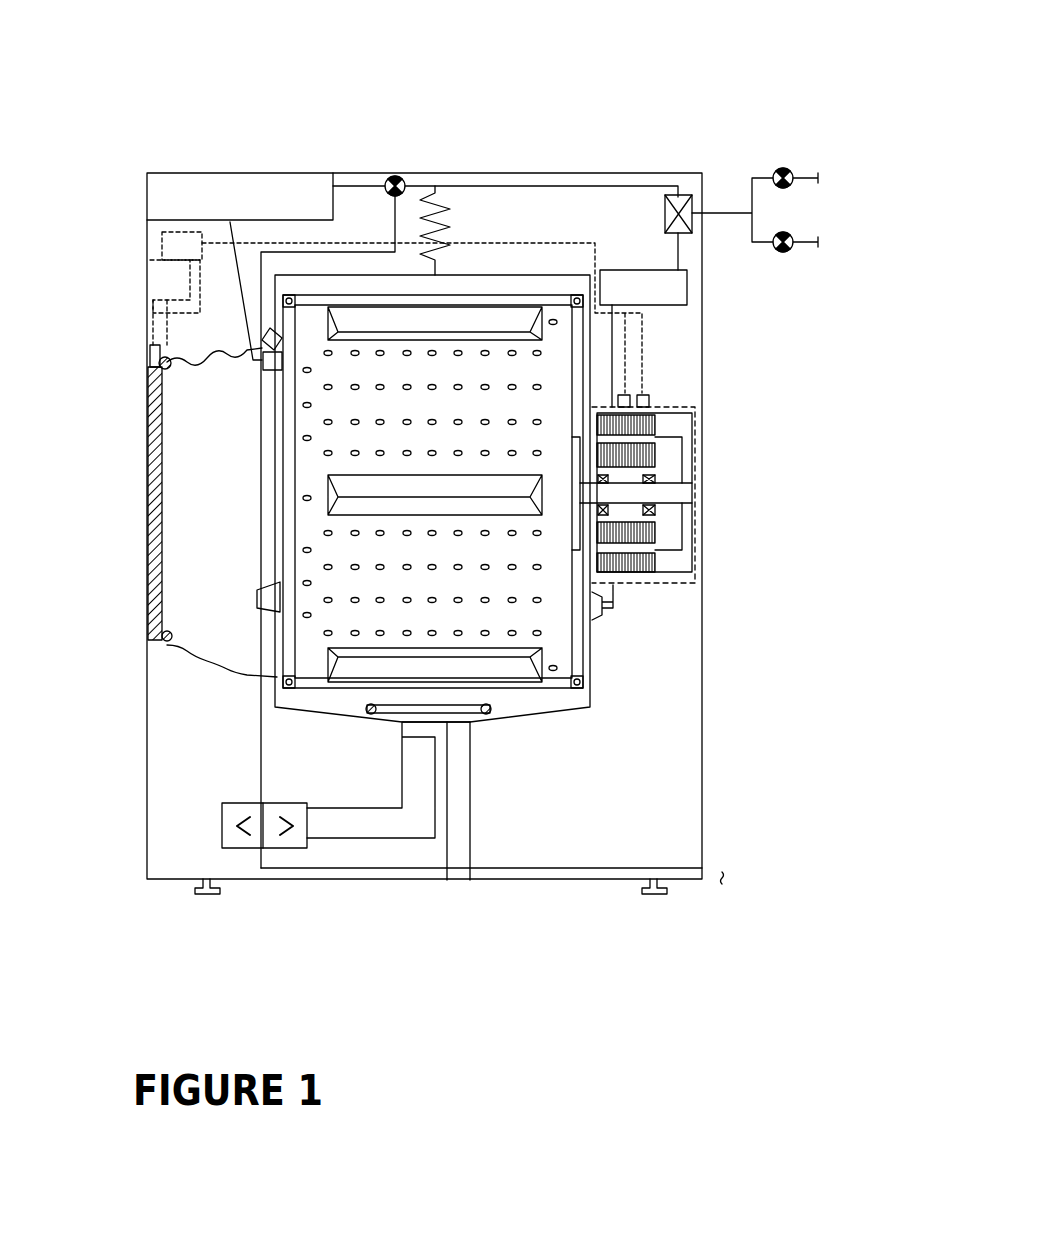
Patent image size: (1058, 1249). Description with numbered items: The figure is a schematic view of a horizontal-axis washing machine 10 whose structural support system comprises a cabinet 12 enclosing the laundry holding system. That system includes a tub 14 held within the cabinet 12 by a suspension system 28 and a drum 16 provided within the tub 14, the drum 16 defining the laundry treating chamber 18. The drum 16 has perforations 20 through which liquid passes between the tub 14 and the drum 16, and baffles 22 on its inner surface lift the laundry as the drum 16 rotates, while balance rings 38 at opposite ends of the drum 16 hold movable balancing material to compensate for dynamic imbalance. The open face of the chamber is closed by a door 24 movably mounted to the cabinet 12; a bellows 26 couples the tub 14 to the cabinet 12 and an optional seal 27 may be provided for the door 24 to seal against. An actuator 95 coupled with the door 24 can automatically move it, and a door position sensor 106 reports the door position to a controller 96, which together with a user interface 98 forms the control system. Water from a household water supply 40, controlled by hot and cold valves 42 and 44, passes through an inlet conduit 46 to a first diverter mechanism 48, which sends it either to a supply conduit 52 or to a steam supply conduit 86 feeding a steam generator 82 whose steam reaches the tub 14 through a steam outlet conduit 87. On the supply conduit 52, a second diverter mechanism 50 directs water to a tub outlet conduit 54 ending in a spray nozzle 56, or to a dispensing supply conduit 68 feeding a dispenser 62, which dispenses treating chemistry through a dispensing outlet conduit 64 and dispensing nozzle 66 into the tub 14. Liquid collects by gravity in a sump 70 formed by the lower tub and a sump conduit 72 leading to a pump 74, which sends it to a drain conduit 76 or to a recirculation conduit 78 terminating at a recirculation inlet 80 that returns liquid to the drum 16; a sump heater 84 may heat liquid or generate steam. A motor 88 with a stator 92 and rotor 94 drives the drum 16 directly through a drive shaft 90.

The washing machine 10 is at (625, 36).
The cabinet 12 is at (623, 170).
The tub 14 is at (468, 275).
The drum 16 is at (360, 295).
The laundry treating chamber 18 is at (408, 414).
The perforations 20 is at (541, 387).
The baffles 22 is at (575, 682).
The door 24 is at (145, 480).
The bellows 26 is at (185, 645).
The seal 27 is at (165, 365).
The suspension system 28 is at (423, 217).
The balance ring 38 is at (283, 688).
The household water supply 40 is at (806, 166).
The hot water valve 42 is at (790, 169).
The cold water valve 44 is at (787, 253).
The inlet conduit 46 is at (720, 211).
The first diverter mechanism 48 is at (680, 196).
The second diverter mechanism 50 is at (390, 176).
The supply conduit 52 is at (557, 185).
The tub outlet conduit 54 is at (320, 252).
The spray nozzle 56 is at (273, 337).
The dispenser 62 is at (277, 197).
The dispensing outlet conduit 64 is at (237, 272).
The dispensing nozzle 66 is at (273, 365).
The dispensing supply conduit 68 is at (365, 185).
The sump 70 is at (478, 732).
The sump conduit 72 is at (412, 818).
The pump 74 is at (243, 852).
The drain conduit 76 is at (716, 880).
The recirculation conduit 78 is at (261, 745).
The recirculation inlet 80 is at (257, 598).
The steam generator 82 is at (692, 289).
The sump heater 84 is at (500, 713).
The steam supply conduit 86 is at (693, 240).
The steam outlet conduit 87 is at (615, 600).
The motor 88 is at (696, 405).
The drive shaft 90 is at (665, 497).
The stator 92 is at (648, 417).
The rotor 94 is at (655, 455).
The actuator 95 is at (145, 360).
The controller 96 is at (183, 263).
The user interface 98 is at (143, 245).
The door position sensor 106 is at (153, 356).